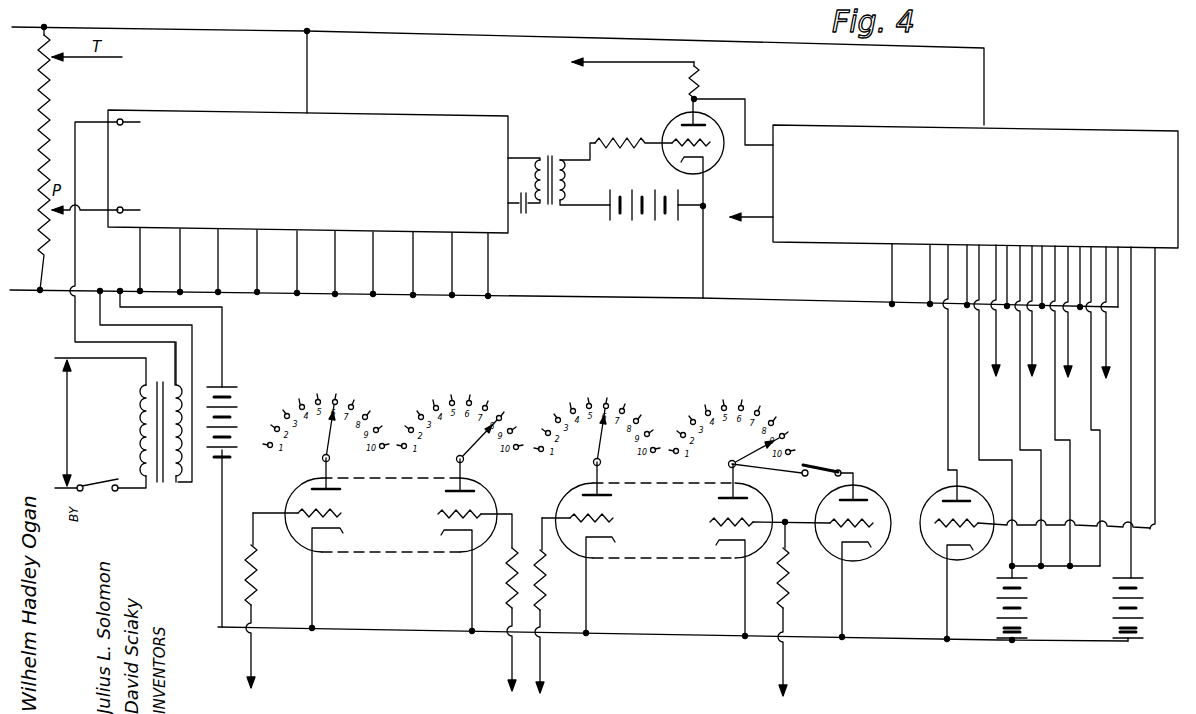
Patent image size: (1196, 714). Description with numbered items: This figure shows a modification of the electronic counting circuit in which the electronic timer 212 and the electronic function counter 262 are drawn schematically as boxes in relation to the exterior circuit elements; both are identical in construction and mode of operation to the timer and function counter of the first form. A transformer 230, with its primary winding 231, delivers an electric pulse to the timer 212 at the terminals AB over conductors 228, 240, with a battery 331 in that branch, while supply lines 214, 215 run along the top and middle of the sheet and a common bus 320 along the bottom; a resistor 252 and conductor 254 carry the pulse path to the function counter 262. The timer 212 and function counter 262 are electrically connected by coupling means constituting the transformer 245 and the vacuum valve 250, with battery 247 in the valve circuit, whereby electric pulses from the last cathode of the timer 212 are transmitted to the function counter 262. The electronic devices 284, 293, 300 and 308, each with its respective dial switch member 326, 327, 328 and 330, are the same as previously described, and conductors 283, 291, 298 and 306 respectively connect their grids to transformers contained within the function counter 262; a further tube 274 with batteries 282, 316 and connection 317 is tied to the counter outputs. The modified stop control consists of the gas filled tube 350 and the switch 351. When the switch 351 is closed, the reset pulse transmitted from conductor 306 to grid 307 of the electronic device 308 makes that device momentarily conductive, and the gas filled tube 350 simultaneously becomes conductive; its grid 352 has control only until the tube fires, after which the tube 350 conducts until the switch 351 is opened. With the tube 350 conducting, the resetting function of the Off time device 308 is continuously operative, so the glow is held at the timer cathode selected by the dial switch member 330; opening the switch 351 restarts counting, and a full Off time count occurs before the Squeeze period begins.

The electronic timer 212 is at (380, 131).
The supply line 214 is at (505, 32).
The common line 215 is at (547, 296).
The conductor 228 is at (182, 392).
The transformer 230 is at (112, 439).
The primary winding 231 is at (138, 449).
The conductor 240 is at (195, 333).
The transformer 245 is at (552, 152).
The battery 247 is at (639, 222).
The vacuum valve 250 is at (668, 125).
The resistor 252 is at (665, 62).
The conductor 254 is at (748, 105).
The electronic function counter 262 is at (954, 341).
The tube 274 is at (935, 494).
The battery 282 is at (990, 628).
The conductor 283 is at (994, 330).
The electronic device 284 is at (298, 543).
The conductor 291 is at (1030, 352).
The electronic device 293 is at (466, 547).
The conductor 298 is at (1065, 365).
The electronic device 300 is at (597, 556).
The conductor 306 is at (1100, 378).
The grid 307 is at (682, 579).
The electronic device 308 is at (738, 558).
The battery 316 is at (1106, 630).
The conductor 317 is at (1148, 535).
The common bus 320 is at (677, 637).
The squeeze selector switch 326 is at (345, 402).
The weld selector switch 327 is at (462, 402).
The hold selector switch 328 is at (605, 402).
The dial switch member 330 is at (739, 405).
The battery 331 is at (240, 396).
The gas filled tube 350 is at (876, 549).
The switch 351 is at (818, 465).
The grid 352 is at (835, 530).